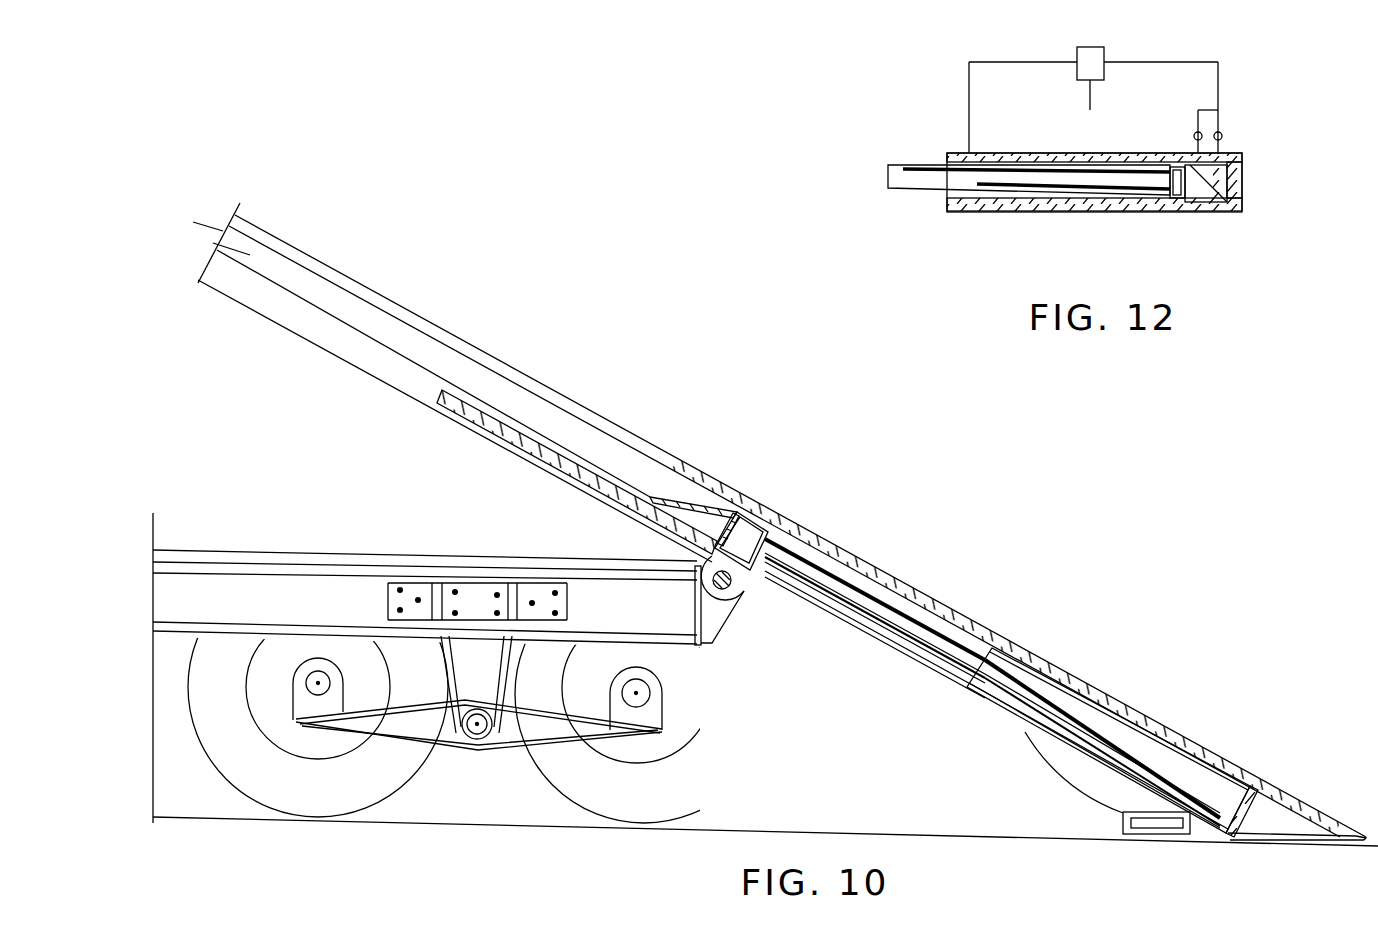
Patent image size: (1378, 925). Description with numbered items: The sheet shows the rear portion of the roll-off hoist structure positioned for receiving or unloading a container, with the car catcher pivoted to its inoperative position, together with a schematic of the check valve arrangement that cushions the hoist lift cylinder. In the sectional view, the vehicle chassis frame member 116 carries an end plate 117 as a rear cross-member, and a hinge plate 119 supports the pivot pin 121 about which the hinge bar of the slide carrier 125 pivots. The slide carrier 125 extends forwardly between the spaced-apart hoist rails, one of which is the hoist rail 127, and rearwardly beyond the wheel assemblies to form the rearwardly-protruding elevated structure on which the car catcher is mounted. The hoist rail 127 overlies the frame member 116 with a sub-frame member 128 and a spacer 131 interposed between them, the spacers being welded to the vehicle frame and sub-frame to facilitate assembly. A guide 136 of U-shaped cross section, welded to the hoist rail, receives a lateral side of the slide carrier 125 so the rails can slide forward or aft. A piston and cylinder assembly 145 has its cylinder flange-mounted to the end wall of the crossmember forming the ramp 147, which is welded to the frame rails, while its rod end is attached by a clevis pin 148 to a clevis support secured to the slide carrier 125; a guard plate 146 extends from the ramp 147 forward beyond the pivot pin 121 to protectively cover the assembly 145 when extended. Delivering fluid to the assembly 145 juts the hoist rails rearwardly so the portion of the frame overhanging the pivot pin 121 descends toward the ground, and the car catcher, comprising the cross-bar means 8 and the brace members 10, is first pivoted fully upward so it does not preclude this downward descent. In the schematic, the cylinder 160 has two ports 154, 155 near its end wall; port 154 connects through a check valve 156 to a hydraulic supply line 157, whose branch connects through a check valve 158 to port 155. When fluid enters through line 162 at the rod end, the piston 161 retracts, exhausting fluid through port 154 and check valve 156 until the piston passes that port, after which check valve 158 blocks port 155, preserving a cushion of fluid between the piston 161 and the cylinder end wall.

In FIG. 10, the cross-bar means 8 is at (1123, 821).
In FIG. 10, the brace members 10 is at (1094, 783).
In FIG. 10, the chassis frame member 116 is at (140, 591).
In FIG. 10, the end plate 117 is at (697, 605).
In FIG. 10, the hinge plate 119 is at (710, 628).
In FIG. 10, the pivot pin 121 is at (737, 592).
In FIG. 10, the slide carrier 125 is at (526, 442).
In FIG. 10, the hoist rail 127 is at (492, 354).
In FIG. 10, the sub-frame member 128 is at (325, 556).
In FIG. 10, the spacer 131 is at (376, 567).
In FIG. 10, the guide 136 is at (880, 640).
In FIG. 10, the piston and cylinder assembly 145 is at (1040, 702).
In FIG. 10, the guard plate 146 is at (1031, 652).
In FIG. 10, the ramp 147 is at (1308, 800).
In FIG. 10, the clevis pin 148 is at (762, 521).
In FIG. 12, the port 154 is at (1222, 208).
In FIG. 12, the port 155 is at (1240, 205).
In FIG. 12, the check valve 156 is at (1195, 132).
In FIG. 12, the hydraulic supply line 157 is at (1176, 66).
In FIG. 12, the check valve 158 is at (1222, 132).
In FIG. 12, the cylinder 160 is at (1097, 212).
In FIG. 12, the piston 161 is at (1190, 212).
In FIG. 12, the line 162 is at (968, 93).